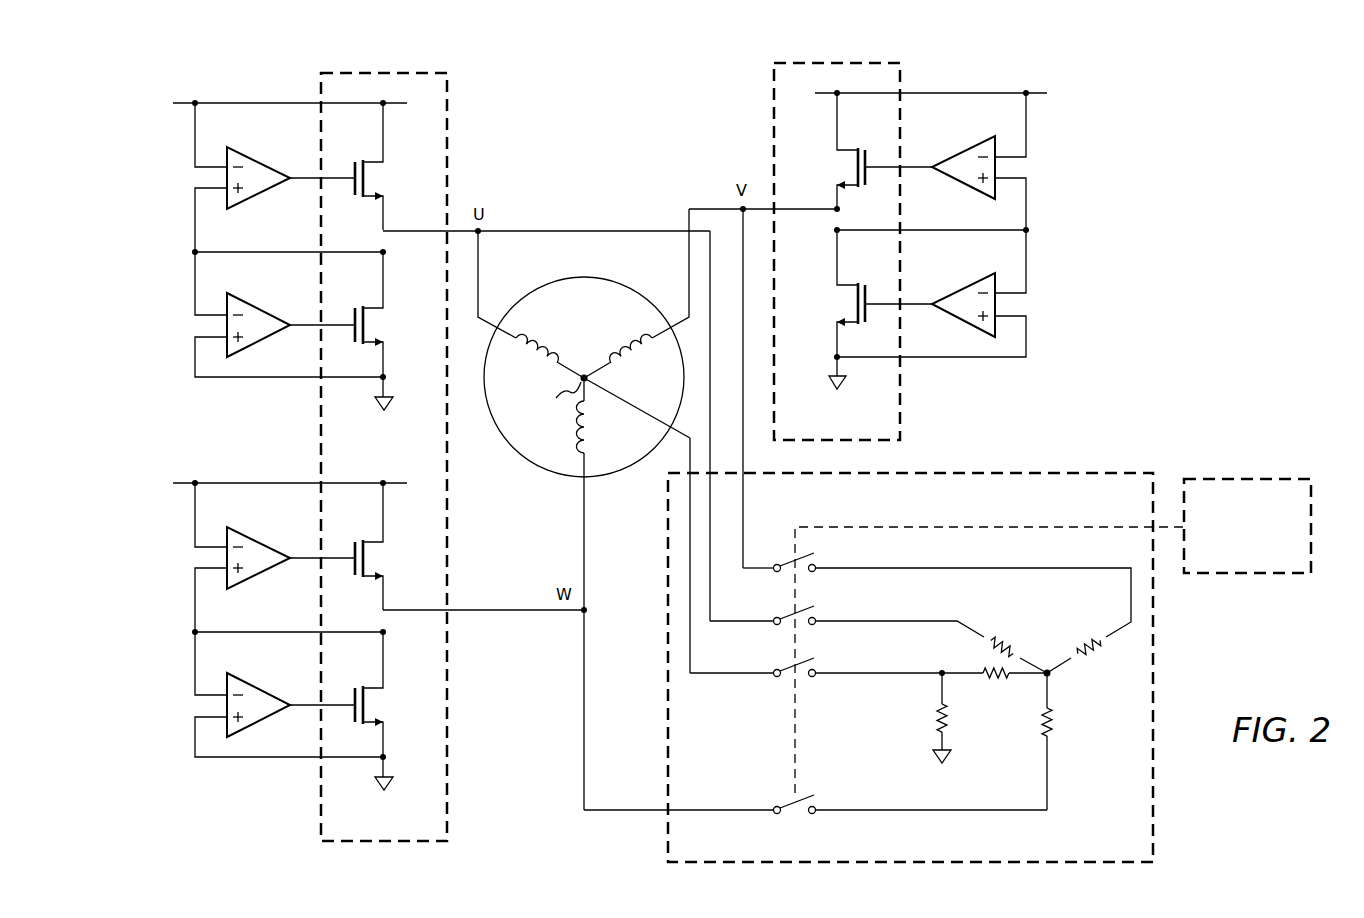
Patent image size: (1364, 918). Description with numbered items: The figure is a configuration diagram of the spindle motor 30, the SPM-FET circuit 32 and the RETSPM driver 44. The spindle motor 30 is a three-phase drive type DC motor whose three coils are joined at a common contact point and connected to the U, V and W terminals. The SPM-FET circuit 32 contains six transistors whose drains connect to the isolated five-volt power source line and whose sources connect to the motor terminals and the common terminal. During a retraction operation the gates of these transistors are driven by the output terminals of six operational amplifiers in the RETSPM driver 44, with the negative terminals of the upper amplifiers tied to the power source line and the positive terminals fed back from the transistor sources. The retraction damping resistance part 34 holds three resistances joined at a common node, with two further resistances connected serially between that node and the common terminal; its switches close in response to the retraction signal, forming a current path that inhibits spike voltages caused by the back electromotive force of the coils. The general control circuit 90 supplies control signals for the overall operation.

The spindle motor 30 is at (525, 470).
The SPM-FET circuit 32 is at (378, 66).
The retraction damping resistance part 34 is at (1009, 465).
The RETSPM driver 44 is at (158, 224).
The general control circuit 90 is at (1247, 479).